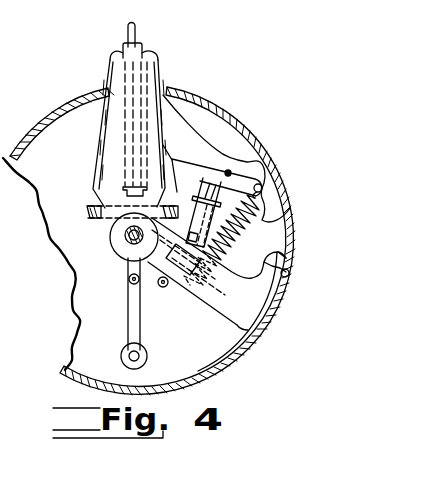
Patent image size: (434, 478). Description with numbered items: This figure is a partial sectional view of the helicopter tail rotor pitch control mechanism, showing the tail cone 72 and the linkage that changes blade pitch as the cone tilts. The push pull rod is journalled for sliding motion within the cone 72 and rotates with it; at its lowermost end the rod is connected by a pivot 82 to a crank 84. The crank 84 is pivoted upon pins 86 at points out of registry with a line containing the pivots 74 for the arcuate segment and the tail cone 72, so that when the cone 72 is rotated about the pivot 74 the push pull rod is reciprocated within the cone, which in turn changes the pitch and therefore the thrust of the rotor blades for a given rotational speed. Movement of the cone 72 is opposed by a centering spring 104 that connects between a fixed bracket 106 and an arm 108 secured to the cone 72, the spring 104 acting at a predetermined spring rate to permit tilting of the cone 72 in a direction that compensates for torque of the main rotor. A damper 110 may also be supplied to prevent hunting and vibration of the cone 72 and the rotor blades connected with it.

The tail cone 72 is at (100, 160).
The pivot 74 is at (114, 244).
The pivot 82 is at (122, 350).
The crank 84 is at (141, 330).
The pins 86 is at (128, 284).
The centering spring 104 is at (288, 208).
The fixed bracket 106 is at (278, 252).
The arm 108 is at (262, 166).
The damper 110 is at (238, 143).